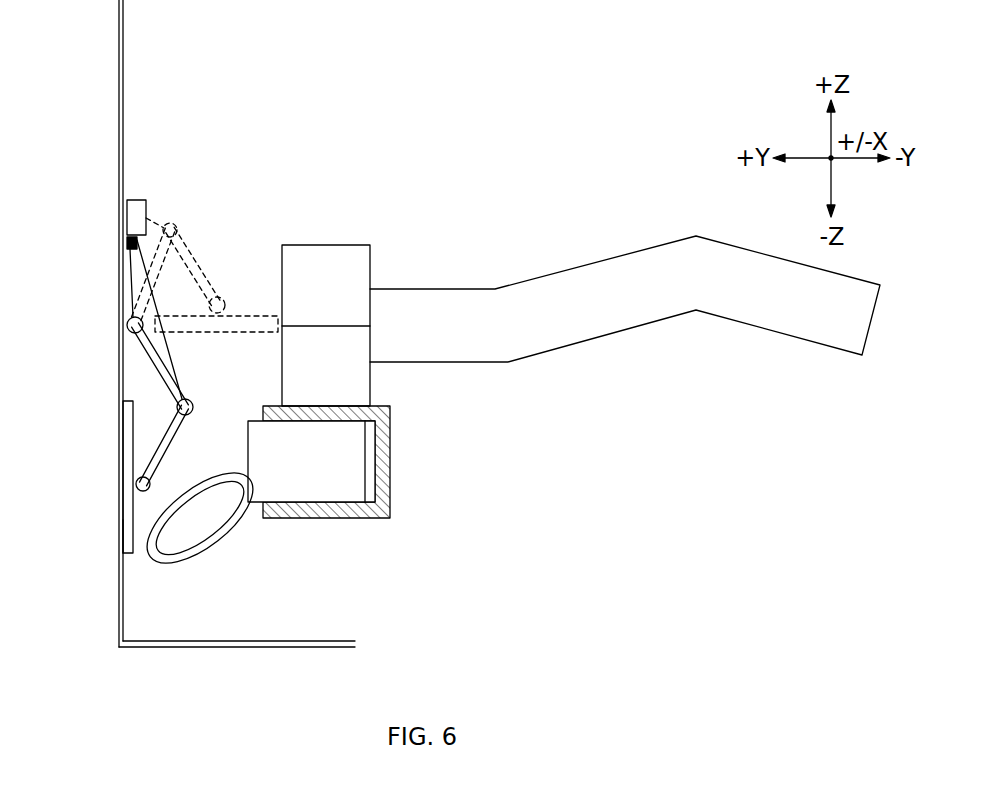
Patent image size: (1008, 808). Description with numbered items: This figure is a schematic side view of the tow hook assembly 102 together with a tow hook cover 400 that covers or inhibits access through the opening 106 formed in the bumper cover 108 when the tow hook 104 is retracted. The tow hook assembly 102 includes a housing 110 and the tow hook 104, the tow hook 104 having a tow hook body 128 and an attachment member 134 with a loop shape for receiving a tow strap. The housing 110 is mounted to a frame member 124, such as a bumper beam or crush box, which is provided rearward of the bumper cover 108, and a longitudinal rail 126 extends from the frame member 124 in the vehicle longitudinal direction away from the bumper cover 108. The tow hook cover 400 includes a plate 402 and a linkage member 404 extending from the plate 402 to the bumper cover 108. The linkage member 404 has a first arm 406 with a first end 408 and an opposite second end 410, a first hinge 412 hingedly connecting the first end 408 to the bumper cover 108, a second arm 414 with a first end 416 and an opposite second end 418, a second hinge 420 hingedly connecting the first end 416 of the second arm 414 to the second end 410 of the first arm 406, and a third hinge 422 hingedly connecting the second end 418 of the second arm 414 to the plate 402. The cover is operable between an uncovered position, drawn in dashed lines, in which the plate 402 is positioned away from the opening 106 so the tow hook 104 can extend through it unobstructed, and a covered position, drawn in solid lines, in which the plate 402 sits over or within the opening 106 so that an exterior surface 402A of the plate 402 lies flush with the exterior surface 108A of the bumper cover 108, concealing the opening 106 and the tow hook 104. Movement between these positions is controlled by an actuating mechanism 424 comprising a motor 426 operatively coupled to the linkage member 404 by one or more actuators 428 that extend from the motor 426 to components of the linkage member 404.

The tow hook assembly 102 is at (438, 481).
The tow hook 104 is at (243, 551).
The opening 106 is at (80, 482).
The bumper cover 108 is at (119, 72).
The exterior surface of the bumper cover 108A is at (119, 622).
The housing 110 is at (412, 415).
The frame member 124 is at (325, 245).
The longitudinal rail 126 is at (575, 266).
The tow hook body 128 is at (340, 466).
The attachment member 134 is at (178, 562).
The tow hook cover 400 is at (214, 236).
The plate 402 is at (123, 450).
The exterior surface of the plate 402A is at (123, 540).
The linkage member 404 is at (122, 366).
The first arm 406 is at (172, 348).
The first end of the first arm 408 is at (128, 322).
The second end of the first arm 410 is at (165, 366).
The first hinge 412 is at (131, 298).
The second arm 414 is at (176, 424).
The first end of the second arm 416 is at (160, 410).
The second end of the second arm 418 is at (155, 485).
The second hinge 420 is at (193, 404).
The third hinge 422 is at (136, 486).
The actuating mechanism 424 is at (113, 175).
The motor 426 is at (127, 220).
The actuators 428 is at (127, 252).